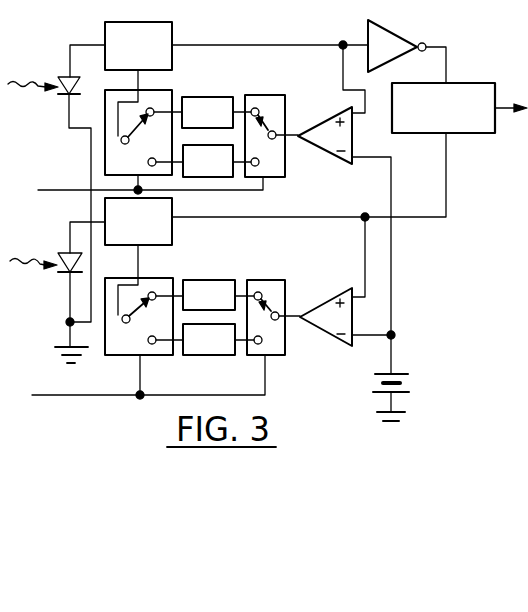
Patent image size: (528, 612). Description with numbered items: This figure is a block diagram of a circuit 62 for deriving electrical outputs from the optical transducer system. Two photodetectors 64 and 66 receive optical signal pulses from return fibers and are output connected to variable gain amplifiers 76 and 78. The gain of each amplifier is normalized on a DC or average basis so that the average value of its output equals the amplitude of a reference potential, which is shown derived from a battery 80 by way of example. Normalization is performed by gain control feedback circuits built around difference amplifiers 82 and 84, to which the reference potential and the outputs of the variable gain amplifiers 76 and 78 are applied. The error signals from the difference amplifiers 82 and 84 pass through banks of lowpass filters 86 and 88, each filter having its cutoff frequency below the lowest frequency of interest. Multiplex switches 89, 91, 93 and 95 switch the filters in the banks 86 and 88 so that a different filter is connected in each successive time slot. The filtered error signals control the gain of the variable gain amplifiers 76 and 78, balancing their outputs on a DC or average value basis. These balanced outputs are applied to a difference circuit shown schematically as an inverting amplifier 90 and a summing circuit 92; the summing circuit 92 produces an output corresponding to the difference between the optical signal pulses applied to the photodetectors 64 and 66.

The circuit 62 is at (74, 26).
The photodetector 64 is at (65, 77).
The photodetector 66 is at (63, 252).
The variable gain amplifier 76 is at (172, 25).
The variable gain amplifier 78 is at (172, 233).
The battery 80 is at (374, 395).
The difference amplifier 82 is at (318, 120).
The difference amplifier 84 is at (323, 300).
The bank of lowpass filters 86 is at (226, 81).
The bank of lowpass filters 88 is at (217, 270).
The multiplex switch 89 is at (105, 157).
The inverting amplifier 90 is at (390, 25).
The multiplex switch 91 is at (285, 165).
The summing circuit 92 is at (455, 133).
The multiplex switch 93 is at (107, 357).
The multiplex switch 95 is at (285, 343).